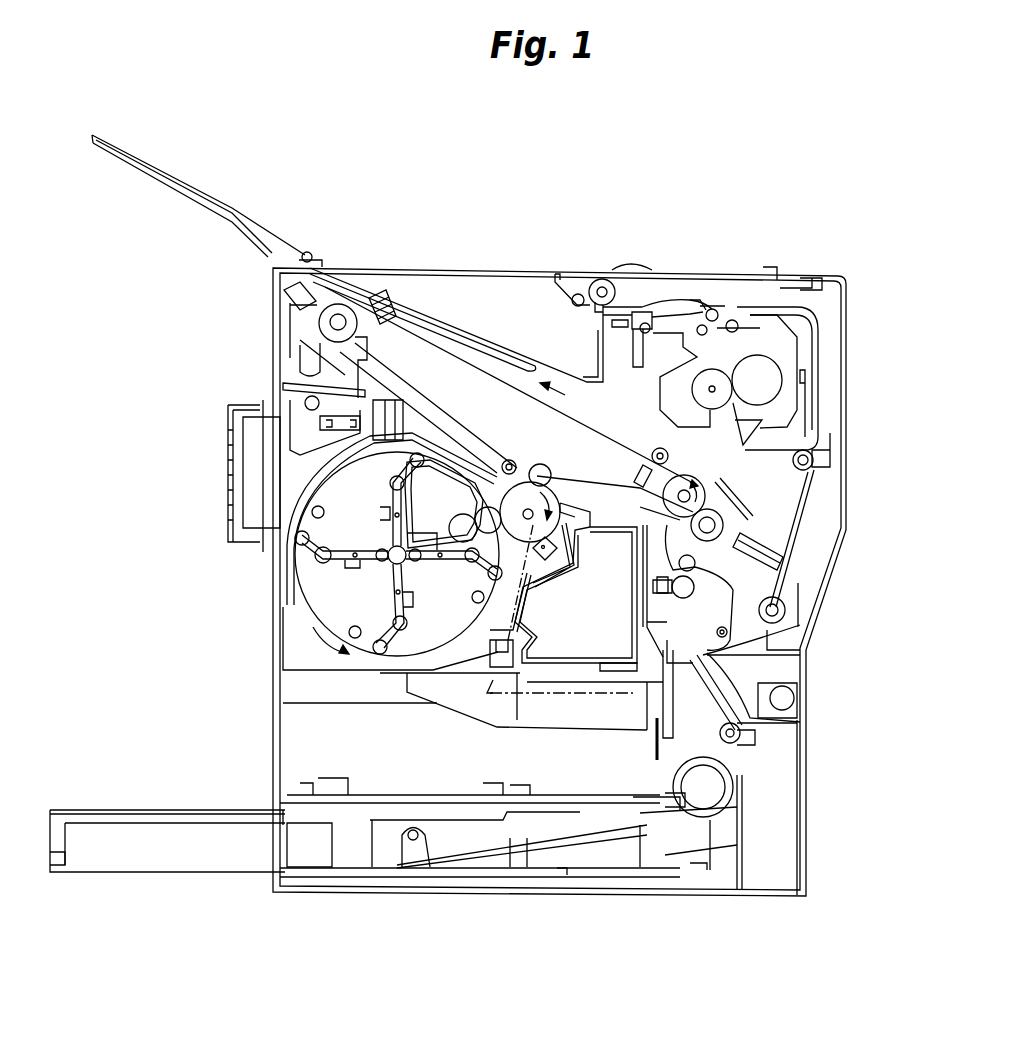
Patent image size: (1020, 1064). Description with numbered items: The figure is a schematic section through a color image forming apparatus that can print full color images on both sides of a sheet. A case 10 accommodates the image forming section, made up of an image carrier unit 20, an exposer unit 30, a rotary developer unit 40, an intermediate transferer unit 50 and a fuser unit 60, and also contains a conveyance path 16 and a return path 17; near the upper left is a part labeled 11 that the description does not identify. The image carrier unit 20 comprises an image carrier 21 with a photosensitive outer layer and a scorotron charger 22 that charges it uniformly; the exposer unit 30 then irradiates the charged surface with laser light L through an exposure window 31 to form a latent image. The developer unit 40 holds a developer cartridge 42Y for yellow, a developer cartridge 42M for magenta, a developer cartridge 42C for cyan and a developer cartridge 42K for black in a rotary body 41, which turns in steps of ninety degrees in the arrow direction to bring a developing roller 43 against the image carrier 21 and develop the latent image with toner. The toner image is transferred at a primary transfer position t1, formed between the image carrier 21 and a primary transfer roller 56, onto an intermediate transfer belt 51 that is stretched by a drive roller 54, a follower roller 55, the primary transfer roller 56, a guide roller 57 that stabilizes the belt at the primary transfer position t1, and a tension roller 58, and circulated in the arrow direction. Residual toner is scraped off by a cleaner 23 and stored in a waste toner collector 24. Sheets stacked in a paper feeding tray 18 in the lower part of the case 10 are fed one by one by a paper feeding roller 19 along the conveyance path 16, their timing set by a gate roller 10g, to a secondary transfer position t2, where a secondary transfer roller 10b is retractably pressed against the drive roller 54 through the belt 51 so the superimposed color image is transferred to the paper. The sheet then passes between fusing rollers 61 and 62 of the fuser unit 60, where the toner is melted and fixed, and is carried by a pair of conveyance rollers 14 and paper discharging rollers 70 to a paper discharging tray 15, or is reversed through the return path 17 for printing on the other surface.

The case 10 is at (832, 272).
The secondary transfer roller 10b is at (707, 530).
The gate roller 10g is at (692, 588).
The paper discharge section 11 is at (313, 285).
The conveyance rollers 14 is at (711, 307).
The paper discharging tray 15 is at (500, 315).
The conveyance path 16 is at (652, 298).
The return path 17 is at (747, 308).
The paper feeding tray 18 is at (190, 843).
The paper feeding roller 19 is at (705, 787).
The image carrier unit 20 is at (593, 598).
The image carrier 21 is at (562, 538).
The scorotron charger 22 is at (560, 556).
The cleaner 23 is at (562, 518).
The waste toner collector 24 is at (572, 648).
The exposer unit 30 is at (547, 707).
The exposure window 31 is at (525, 645).
The developer unit 40 is at (300, 602).
The rotary body 41 is at (371, 548).
The developer cartridge for magenta 42M is at (341, 511).
The developer cartridge for yellow 42Y is at (453, 505).
The developer cartridge for cyan 42C is at (355, 612).
The developer cartridge for black 42K is at (454, 607).
The developing roller 43 is at (530, 512).
The intermediate transferer unit 50 is at (439, 346).
The intermediate transfer belt 51 is at (483, 369).
The drive roller 54 is at (680, 483).
The follower roller 55 is at (340, 307).
The primary transfer roller 56 is at (538, 463).
The guide roller 57 is at (507, 459).
The tension roller 58 is at (652, 453).
The fuser unit 60 is at (786, 353).
The fusing roller 61 is at (700, 392).
The fusing roller 62 is at (763, 395).
The paper discharging rollers 70 is at (597, 258).
The laser light L is at (532, 582).
The primary transfer position t1 is at (538, 479).
The secondary transfer position t2 is at (705, 518).